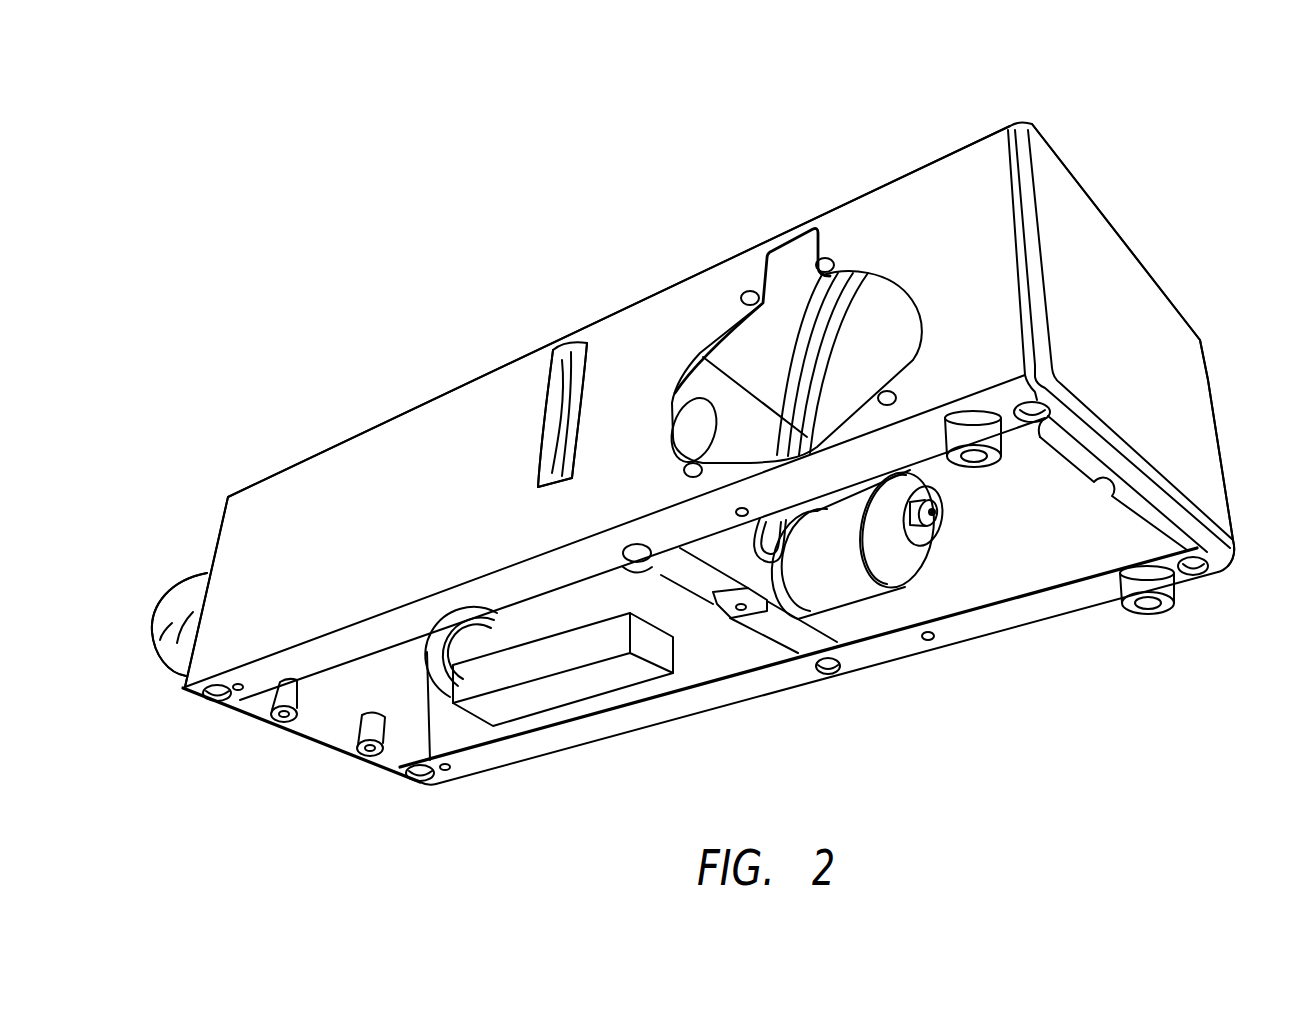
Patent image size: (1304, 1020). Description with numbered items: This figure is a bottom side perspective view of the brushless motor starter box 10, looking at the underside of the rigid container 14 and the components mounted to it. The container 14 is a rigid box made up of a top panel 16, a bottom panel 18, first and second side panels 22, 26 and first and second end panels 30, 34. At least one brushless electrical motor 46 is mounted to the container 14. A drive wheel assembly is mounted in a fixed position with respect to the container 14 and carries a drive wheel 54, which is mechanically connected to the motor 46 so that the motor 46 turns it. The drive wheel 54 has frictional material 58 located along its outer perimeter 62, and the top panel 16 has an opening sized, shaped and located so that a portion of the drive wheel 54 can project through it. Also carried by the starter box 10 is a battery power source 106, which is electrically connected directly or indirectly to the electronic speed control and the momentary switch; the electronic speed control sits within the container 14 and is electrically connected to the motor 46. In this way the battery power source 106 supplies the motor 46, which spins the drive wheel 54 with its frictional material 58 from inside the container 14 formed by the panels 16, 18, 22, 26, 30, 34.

The brushless motor starter box 10 is at (1135, 160).
The rigid container 14 is at (962, 183).
The top panel 16 is at (330, 440).
The bottom panel 18 is at (1053, 606).
The first side panel 22 is at (723, 703).
The second side panel 26 is at (435, 420).
The first end panel 30 is at (1160, 323).
The second end panel 34 is at (223, 520).
The brushless electrical motor 46 is at (855, 578).
The drive wheel 54 is at (601, 333).
The frictional material 58 is at (548, 428).
The outer perimeter 62 is at (567, 414).
The battery power source 106 is at (532, 667).